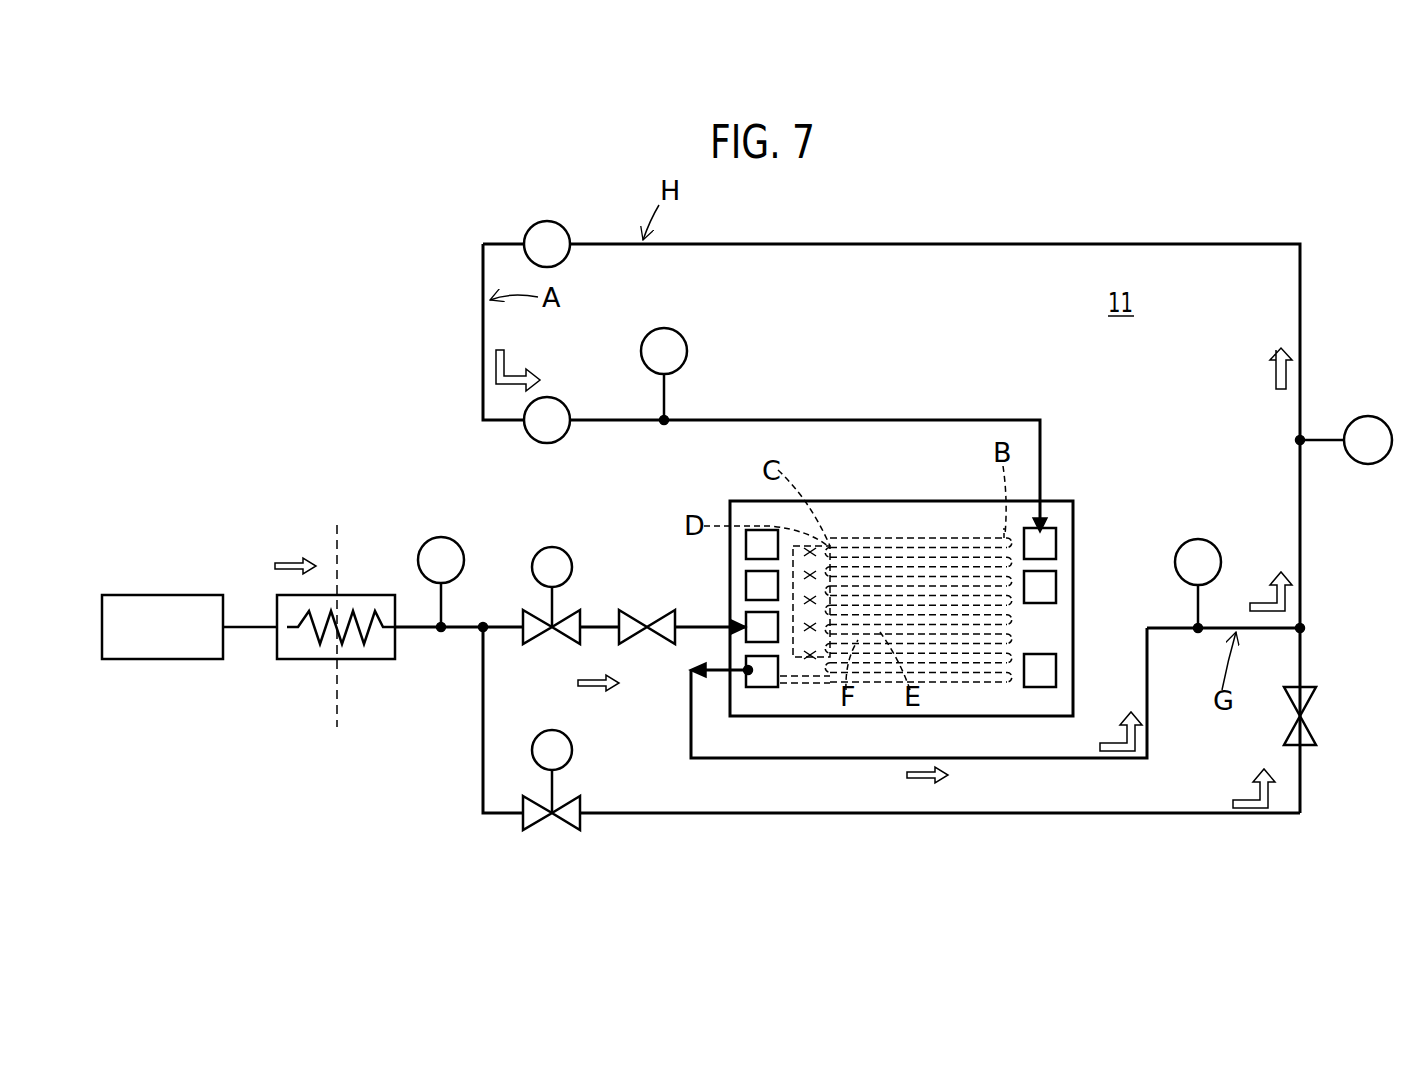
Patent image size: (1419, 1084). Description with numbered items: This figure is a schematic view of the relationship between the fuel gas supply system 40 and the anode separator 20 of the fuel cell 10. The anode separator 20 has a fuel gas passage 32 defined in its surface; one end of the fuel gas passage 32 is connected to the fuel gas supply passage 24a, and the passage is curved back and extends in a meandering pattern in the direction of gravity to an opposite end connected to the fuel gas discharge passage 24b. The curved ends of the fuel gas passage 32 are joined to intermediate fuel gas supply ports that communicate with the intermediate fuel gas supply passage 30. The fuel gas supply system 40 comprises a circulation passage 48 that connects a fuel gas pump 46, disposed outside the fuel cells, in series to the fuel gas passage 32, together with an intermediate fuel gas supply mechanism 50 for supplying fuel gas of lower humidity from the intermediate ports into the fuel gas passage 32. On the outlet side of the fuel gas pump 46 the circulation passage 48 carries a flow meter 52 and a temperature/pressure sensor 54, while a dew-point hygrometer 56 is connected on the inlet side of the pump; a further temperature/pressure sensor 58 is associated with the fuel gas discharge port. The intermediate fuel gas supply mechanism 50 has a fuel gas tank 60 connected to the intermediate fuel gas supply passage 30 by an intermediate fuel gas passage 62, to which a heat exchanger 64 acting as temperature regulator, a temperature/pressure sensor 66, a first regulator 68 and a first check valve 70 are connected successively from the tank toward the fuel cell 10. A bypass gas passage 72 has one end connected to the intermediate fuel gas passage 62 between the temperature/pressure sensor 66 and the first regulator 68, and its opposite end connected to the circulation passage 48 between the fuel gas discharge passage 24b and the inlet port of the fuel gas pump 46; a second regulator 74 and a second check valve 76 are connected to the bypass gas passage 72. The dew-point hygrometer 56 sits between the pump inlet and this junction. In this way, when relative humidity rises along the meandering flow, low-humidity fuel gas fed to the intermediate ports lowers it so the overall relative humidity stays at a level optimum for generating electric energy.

The fuel cell 10 is at (930, 378).
The anode separator 20 is at (828, 500).
The fuel gas supply passage 24a is at (1045, 545).
The fuel gas discharge passage 24b is at (764, 682).
The intermediate fuel gas supply passage 30 is at (758, 628).
The fuel gas passage 32 is at (908, 535).
The fuel gas supply system 40 is at (410, 280).
The fuel gas pump 46 is at (567, 226).
The circulation passage 48 is at (1252, 244).
The intermediate fuel gas supply mechanism 50 is at (410, 692).
The flow meter 52 is at (564, 397).
The temperature/pressure sensor 54 is at (680, 332).
The dew-point hygrometer 56 is at (1368, 416).
The temperature/pressure sensor 58 is at (1204, 539).
The fuel gas tank 60 is at (161, 595).
The intermediate fuel gas passage 62 is at (248, 628).
The heat exchanger 64 is at (358, 594).
The temperature/pressure sensor 66 is at (448, 537).
The first regulator 68 is at (560, 547).
The first check valve 70 is at (648, 625).
The bypass gas passage 72 is at (988, 815).
The second regulator 74 is at (558, 832).
The second check valve 76 is at (1307, 713).